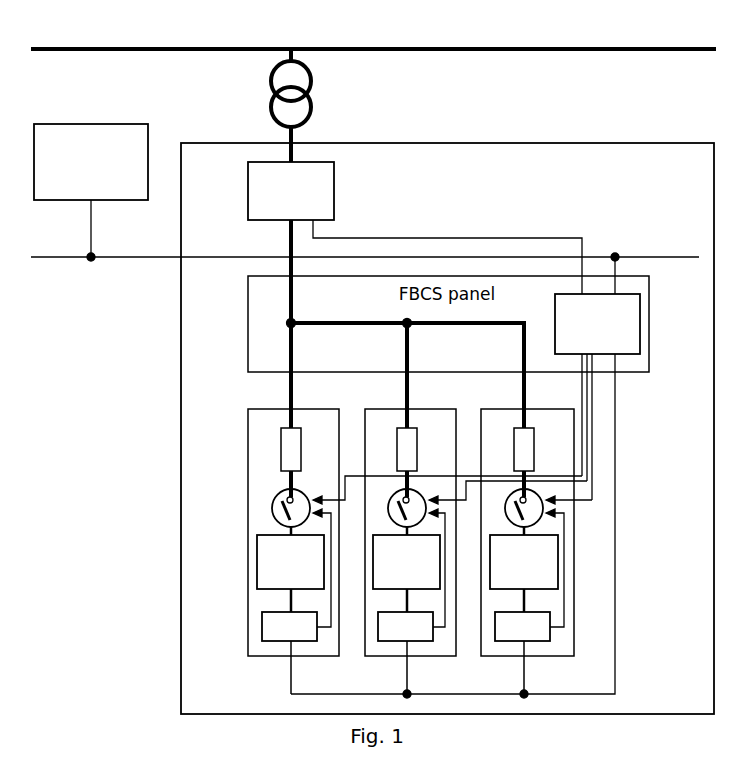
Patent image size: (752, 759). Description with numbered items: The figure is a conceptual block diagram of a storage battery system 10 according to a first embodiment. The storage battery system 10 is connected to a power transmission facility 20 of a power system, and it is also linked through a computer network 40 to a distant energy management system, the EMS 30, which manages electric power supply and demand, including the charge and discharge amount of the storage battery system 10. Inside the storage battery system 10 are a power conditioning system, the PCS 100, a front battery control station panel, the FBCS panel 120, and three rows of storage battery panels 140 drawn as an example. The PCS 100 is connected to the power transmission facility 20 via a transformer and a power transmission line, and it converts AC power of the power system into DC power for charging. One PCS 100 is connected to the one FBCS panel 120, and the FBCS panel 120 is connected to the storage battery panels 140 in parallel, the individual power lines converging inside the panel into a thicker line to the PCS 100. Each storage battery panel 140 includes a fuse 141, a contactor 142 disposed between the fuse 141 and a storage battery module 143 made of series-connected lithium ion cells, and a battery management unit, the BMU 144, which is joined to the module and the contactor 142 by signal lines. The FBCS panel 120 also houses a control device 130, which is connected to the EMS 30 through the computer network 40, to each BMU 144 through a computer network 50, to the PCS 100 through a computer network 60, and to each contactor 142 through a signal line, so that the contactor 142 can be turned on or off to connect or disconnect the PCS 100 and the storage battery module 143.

The storage battery system 10 is at (463, 142).
The power transmission facility 20 is at (176, 48).
The energy management system (EMS) 30 is at (92, 123).
The computer network 40 is at (137, 256).
The computer network 50 is at (578, 693).
The computer network 60 is at (437, 237).
The power conditioning system (PCS) 100 is at (335, 182).
The front battery control station panel (FBCS panel) 120 is at (247, 322).
The control device 130 is at (641, 321).
The storage battery panel 140 is at (260, 409).
The fuse 141 is at (281, 450).
The contactor 142 is at (271, 505).
The storage battery module 143 is at (256, 557).
The battery management unit (BMU) 144 is at (261, 626).